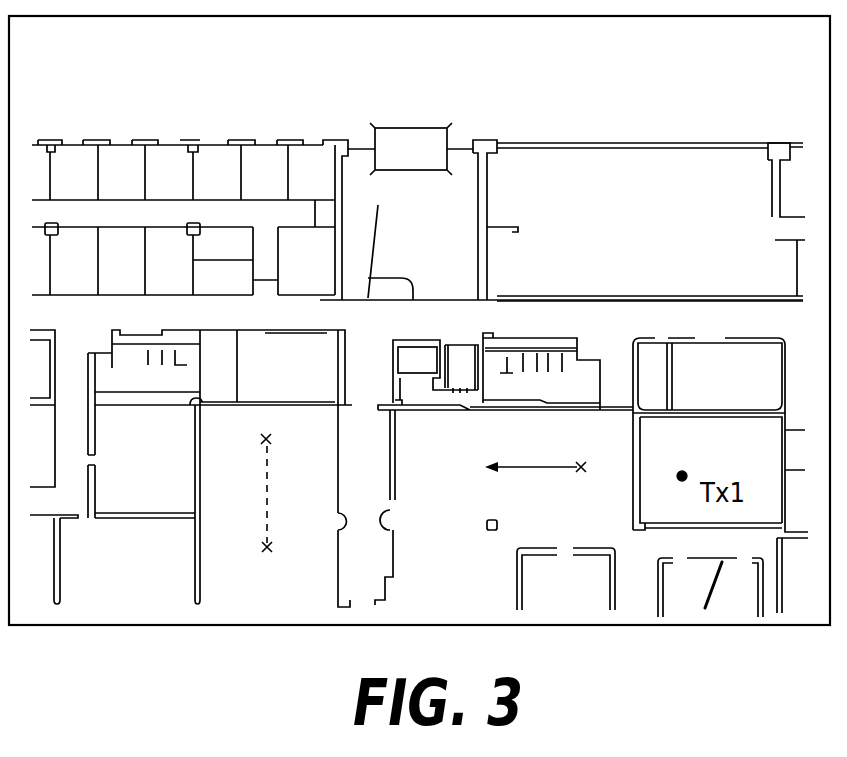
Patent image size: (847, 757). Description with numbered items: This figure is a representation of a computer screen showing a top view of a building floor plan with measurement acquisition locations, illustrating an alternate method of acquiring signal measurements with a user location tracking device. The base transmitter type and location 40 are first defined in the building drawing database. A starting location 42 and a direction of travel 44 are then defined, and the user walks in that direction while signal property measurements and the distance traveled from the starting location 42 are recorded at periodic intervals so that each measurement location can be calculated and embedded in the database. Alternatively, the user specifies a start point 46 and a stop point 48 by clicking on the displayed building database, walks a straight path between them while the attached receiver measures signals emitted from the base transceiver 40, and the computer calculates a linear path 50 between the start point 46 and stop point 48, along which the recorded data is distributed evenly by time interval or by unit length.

The base transmitter location 40 is at (685, 472).
The starting location 42 is at (588, 467).
The direction of travel 44 is at (535, 470).
The start point 46 is at (260, 547).
The stop point 48 is at (260, 438).
The linear path 50 is at (267, 488).